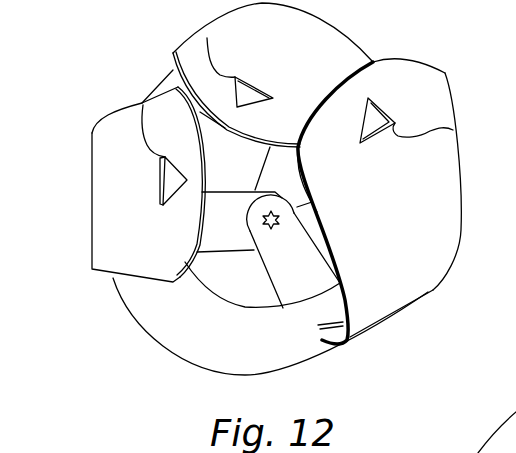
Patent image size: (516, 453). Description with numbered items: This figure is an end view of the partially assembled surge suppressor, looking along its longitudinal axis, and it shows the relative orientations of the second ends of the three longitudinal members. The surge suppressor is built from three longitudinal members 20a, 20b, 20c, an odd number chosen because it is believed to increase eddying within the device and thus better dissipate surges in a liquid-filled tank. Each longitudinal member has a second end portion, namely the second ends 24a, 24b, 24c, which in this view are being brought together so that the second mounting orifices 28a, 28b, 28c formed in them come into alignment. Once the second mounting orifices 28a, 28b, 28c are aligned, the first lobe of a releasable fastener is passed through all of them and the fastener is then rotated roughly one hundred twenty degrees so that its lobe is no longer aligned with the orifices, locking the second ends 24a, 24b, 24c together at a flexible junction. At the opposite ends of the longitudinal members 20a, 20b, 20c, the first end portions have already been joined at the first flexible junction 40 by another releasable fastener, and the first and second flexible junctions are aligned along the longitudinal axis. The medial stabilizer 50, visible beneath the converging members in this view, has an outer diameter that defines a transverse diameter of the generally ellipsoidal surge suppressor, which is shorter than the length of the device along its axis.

The longitudinal member 20a is at (98, 192).
The longitudinal member 20b is at (328, 43).
The longitudinal member 20c is at (420, 287).
The second end portion 24a is at (153, 233).
The second end portion 24b is at (305, 70).
The second end portion 24c is at (406, 183).
The second mounting orifice 28a is at (143, 105).
The second mounting orifice 28b is at (207, 38).
The second mounting orifice 28c is at (453, 130).
The first flexible junction 40 is at (280, 230).
The medial stabilizer 50 is at (248, 351).